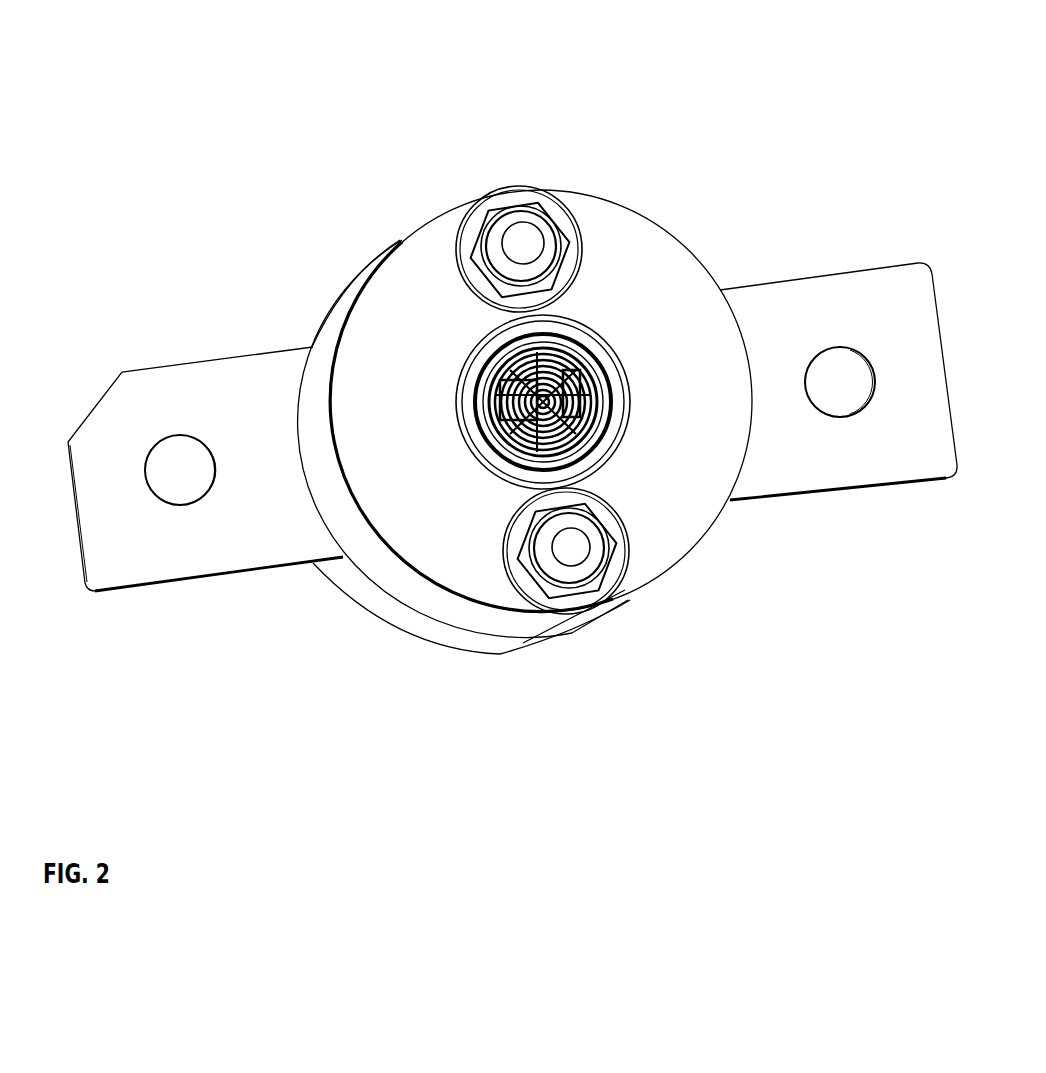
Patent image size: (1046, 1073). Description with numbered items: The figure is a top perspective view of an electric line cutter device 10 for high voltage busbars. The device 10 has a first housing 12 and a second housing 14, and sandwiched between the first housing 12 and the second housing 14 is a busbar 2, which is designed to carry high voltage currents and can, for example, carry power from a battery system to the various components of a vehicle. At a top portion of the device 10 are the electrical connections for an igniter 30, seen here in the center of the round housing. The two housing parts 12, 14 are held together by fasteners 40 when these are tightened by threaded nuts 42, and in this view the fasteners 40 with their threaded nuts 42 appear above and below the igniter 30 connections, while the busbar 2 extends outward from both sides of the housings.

The electric line cutter device 10 is at (136, 80).
The busbar 2 is at (128, 385).
The first housing 12 is at (335, 333).
The second housing 14 is at (352, 596).
The igniter 30 is at (573, 350).
The fasteners 40 is at (522, 232).
The threaded nuts 42 is at (492, 213).